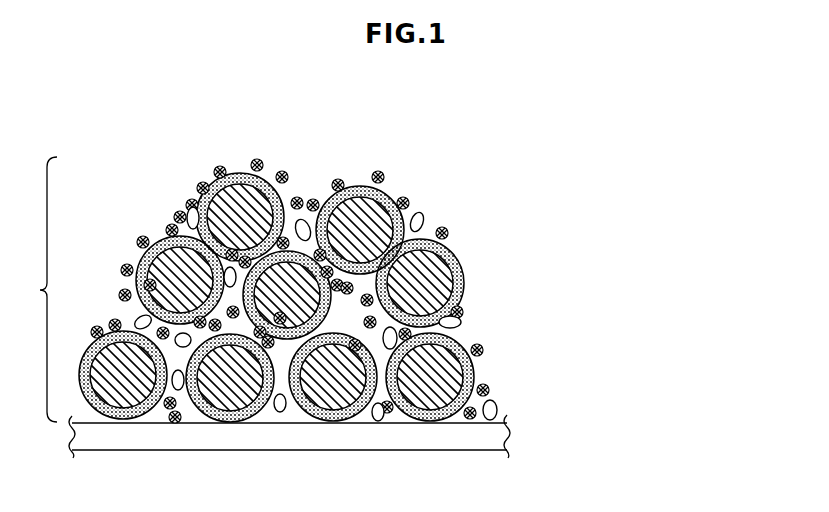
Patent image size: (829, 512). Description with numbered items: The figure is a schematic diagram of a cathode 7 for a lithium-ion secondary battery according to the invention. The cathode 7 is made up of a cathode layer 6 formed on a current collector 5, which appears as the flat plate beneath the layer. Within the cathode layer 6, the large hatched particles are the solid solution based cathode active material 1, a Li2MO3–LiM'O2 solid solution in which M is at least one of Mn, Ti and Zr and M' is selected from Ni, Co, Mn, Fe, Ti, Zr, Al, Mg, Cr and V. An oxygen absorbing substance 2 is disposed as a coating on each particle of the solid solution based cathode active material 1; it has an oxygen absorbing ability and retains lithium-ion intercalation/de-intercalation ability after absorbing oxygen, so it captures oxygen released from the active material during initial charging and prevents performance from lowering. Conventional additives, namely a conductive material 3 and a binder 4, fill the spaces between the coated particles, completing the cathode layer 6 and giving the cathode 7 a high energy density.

The solid solution based cathode active material 1 is at (428, 270).
The oxygen absorbing substance 2 is at (463, 268).
The conductive material 3 is at (458, 312).
The binder 4 is at (463, 333).
The current collector 5 is at (470, 435).
The cathode layer 6 is at (38, 289).
The cathode 7 is at (425, 150).